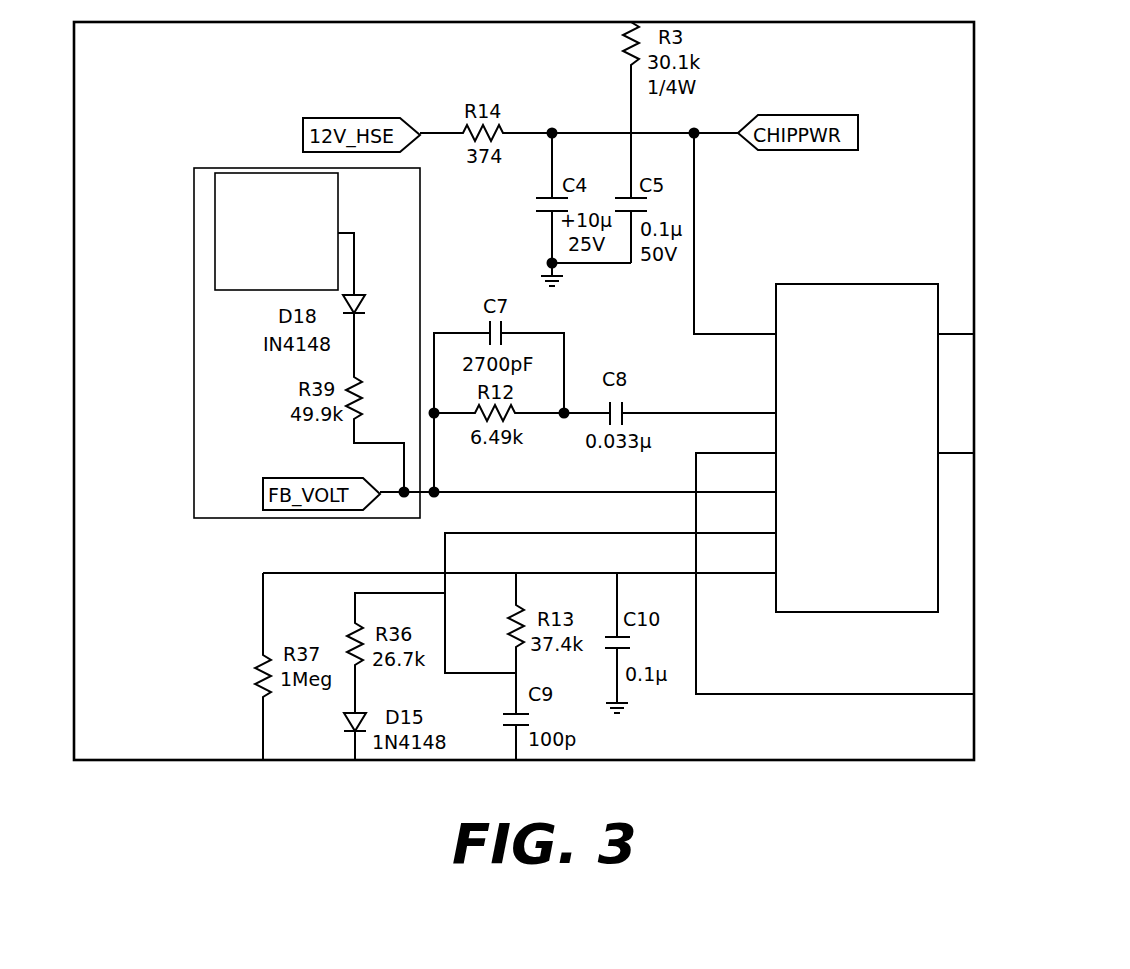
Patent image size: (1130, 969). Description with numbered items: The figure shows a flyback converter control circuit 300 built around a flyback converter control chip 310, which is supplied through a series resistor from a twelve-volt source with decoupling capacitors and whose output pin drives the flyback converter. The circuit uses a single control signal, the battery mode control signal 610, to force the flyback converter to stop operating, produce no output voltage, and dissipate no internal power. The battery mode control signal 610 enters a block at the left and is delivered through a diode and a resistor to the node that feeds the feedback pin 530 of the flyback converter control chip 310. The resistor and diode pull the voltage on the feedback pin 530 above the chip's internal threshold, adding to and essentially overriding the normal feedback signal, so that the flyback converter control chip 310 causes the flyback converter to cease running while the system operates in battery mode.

The flyback converter control circuit 300 is at (1015, 704).
The flyback converter control chip 310 is at (929, 609).
The feedback pin 530 is at (816, 487).
The battery mode control signal 610 is at (338, 196).